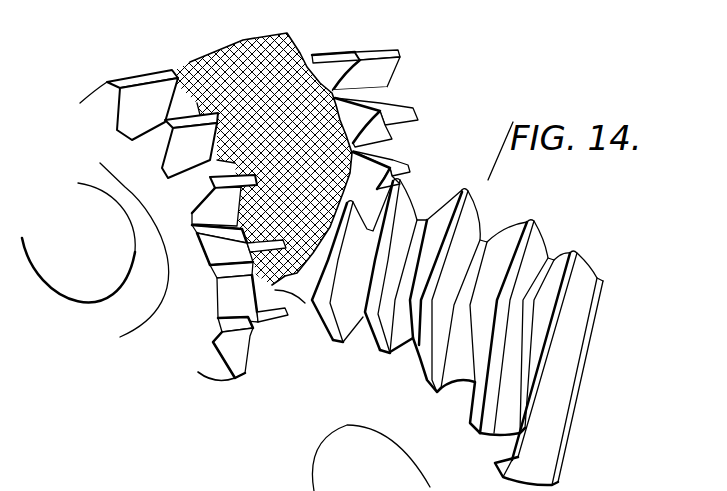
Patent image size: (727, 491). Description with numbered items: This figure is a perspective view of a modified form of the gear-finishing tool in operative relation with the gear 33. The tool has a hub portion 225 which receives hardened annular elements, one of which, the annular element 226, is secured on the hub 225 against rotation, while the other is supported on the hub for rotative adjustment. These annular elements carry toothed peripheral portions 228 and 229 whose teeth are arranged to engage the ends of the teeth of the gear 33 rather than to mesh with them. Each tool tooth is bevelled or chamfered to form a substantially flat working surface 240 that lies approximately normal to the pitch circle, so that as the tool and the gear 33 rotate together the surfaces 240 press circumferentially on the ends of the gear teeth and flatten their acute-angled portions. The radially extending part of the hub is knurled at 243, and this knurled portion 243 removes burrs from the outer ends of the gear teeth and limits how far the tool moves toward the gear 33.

The bevelled working surfaces of the tool teeth 240 is at (183, 67).
The knurled portion 243 is at (307, 53).
The toothed peripheral portion 229 is at (385, 102).
The toothed peripheral portion 228 is at (197, 190).
The gear 33 is at (510, 242).
The hub portion 225 is at (130, 320).
The annular element 226 is at (193, 340).